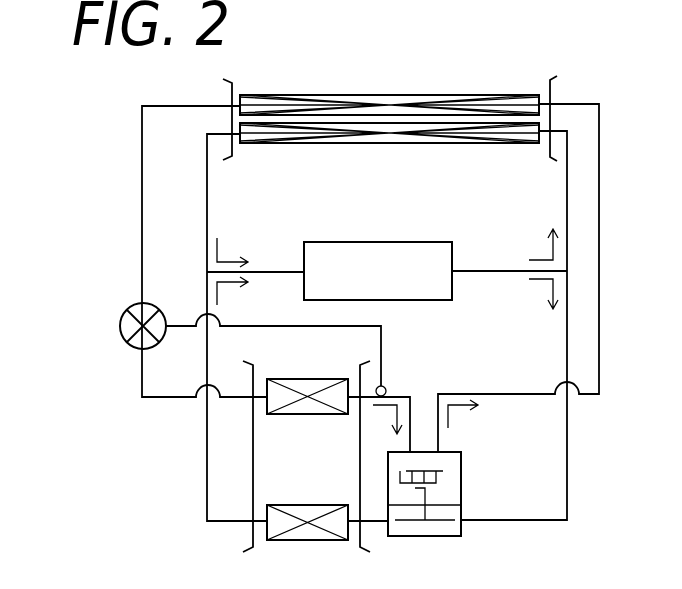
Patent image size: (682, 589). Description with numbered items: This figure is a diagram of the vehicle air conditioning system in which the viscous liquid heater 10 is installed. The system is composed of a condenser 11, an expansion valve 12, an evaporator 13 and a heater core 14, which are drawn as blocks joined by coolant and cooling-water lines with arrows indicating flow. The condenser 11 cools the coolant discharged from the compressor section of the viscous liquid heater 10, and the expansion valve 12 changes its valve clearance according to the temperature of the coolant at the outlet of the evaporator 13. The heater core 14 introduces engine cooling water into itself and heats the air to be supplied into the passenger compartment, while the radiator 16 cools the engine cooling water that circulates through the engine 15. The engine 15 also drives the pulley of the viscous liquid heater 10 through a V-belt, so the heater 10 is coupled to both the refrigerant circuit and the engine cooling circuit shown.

The viscous liquid heater 10 is at (462, 488).
The condenser 11 is at (495, 93).
The expansion valve 12 is at (118, 326).
The evaporator 13 is at (306, 379).
The heater core 14 is at (308, 505).
The engine 15 is at (410, 242).
The radiator 16 is at (498, 145).